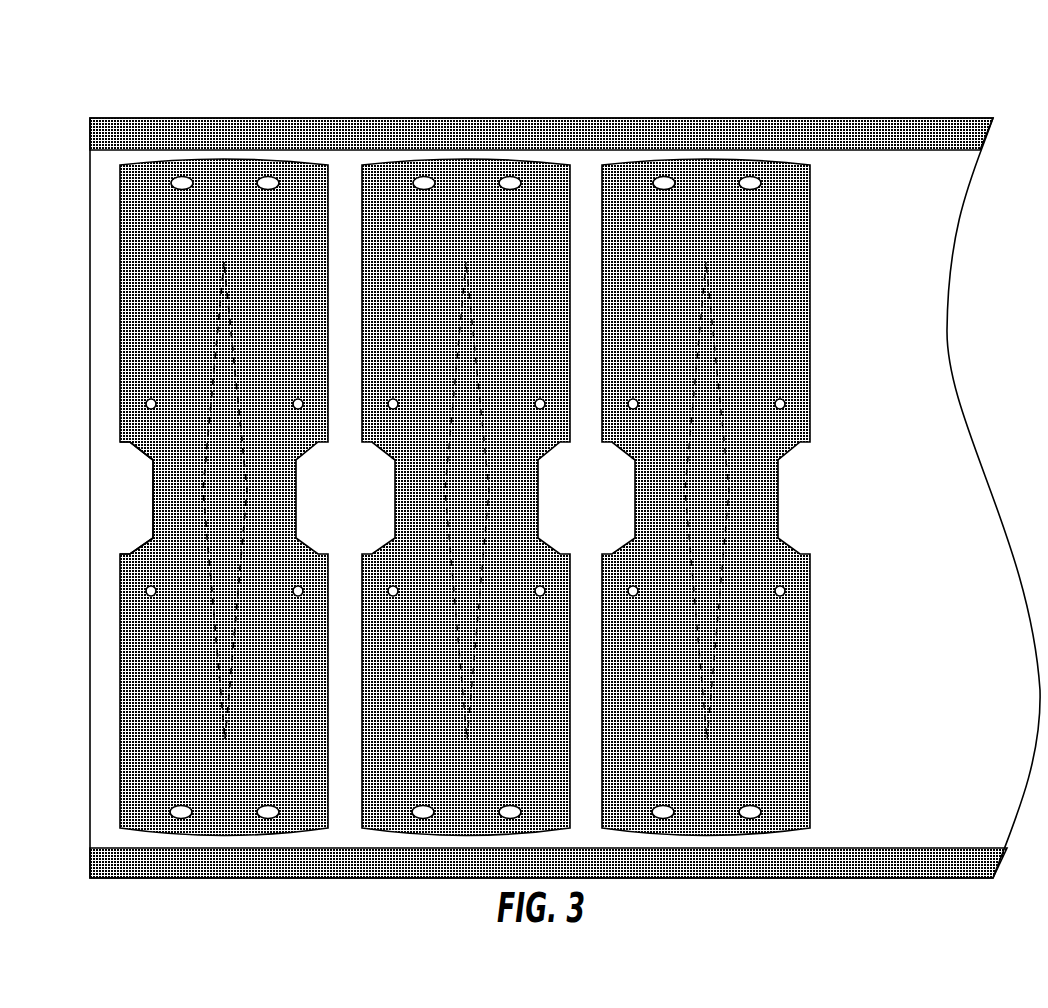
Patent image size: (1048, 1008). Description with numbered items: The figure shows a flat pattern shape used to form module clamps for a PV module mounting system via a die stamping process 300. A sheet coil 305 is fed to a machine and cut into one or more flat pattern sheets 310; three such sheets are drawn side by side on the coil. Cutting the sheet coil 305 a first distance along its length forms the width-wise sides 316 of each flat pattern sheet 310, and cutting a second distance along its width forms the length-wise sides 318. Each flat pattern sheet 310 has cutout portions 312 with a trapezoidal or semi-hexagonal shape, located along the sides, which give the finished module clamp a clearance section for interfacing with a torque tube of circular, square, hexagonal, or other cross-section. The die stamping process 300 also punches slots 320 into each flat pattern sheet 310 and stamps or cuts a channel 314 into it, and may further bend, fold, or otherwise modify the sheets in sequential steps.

The die stamping process 300 is at (536, 441).
The sheet coil 305 is at (767, 131).
The flat pattern sheet 310 is at (180, 497).
The cutout portion 312 is at (136, 493).
The channel 314 is at (213, 375).
The width-wise side 316 is at (466, 159).
The length-wise side 318 is at (754, 459).
The slot 320 is at (661, 182).